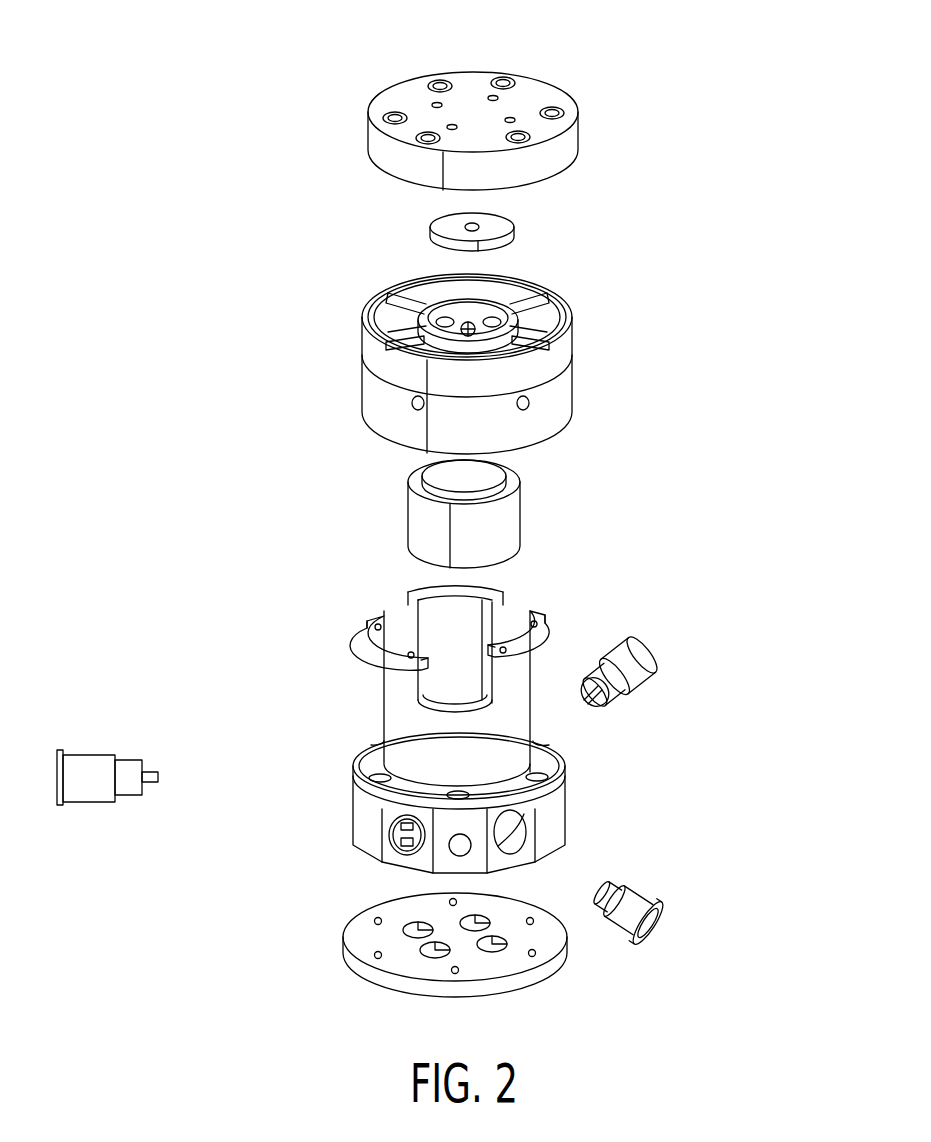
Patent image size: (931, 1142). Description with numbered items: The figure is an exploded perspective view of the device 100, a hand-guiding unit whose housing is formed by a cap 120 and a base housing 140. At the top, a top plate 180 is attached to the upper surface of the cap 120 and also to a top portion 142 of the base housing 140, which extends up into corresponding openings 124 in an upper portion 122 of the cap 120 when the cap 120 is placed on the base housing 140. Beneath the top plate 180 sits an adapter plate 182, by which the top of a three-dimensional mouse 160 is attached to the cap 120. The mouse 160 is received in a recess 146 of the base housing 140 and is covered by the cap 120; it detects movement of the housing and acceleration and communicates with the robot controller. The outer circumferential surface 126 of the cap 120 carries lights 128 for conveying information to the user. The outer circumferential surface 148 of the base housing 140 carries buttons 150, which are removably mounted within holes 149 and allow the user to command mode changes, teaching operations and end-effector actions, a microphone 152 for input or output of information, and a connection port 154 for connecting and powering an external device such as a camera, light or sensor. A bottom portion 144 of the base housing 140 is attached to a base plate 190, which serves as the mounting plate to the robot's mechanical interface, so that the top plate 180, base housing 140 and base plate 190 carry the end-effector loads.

The device 100 is at (413, 506).
The cap 120 is at (482, 357).
The upper portion 122 is at (496, 334).
The openings 124 is at (409, 306).
The outer circumferential surface 126 is at (491, 404).
The lights 128 is at (457, 374).
The base housing 140 is at (477, 731).
The top portion 142 is at (434, 640).
The bottom portion 144 is at (463, 827).
The recess 146 is at (437, 685).
The outer circumferential surface 148 is at (491, 771).
The holes 149 is at (556, 829).
The buttons 150 is at (396, 790).
The microphone 152 is at (385, 877).
The connection port 154 is at (362, 826).
The 3D mouse 160 is at (416, 514).
The top plate 180 is at (506, 131).
The adapter plate 182 is at (507, 229).
The base plate 190 is at (474, 953).